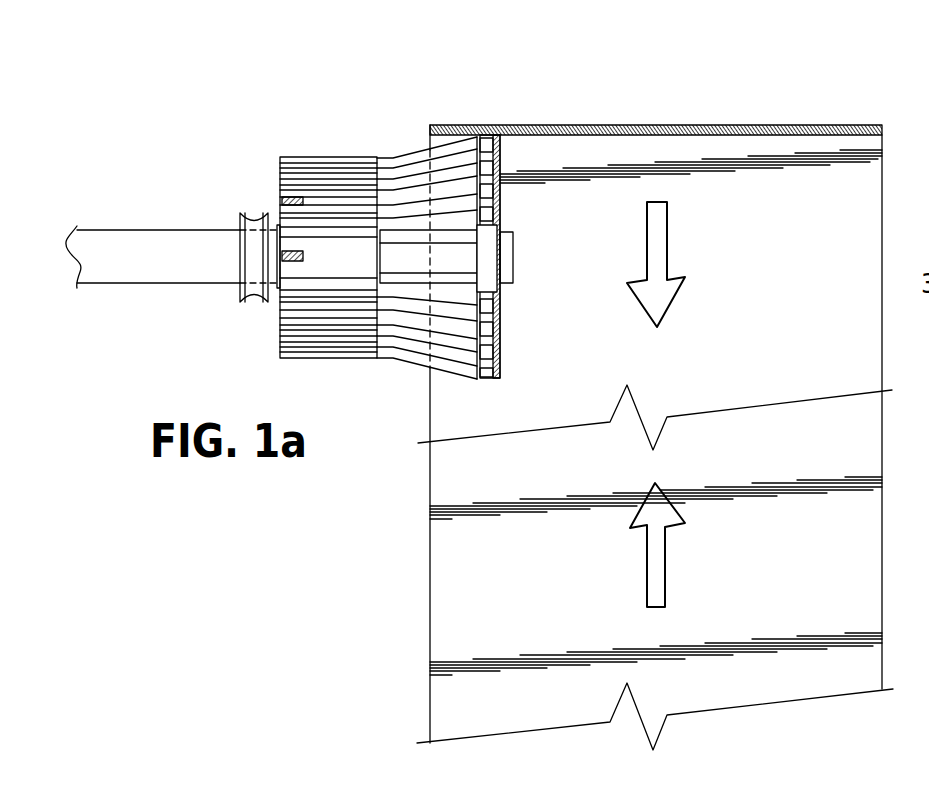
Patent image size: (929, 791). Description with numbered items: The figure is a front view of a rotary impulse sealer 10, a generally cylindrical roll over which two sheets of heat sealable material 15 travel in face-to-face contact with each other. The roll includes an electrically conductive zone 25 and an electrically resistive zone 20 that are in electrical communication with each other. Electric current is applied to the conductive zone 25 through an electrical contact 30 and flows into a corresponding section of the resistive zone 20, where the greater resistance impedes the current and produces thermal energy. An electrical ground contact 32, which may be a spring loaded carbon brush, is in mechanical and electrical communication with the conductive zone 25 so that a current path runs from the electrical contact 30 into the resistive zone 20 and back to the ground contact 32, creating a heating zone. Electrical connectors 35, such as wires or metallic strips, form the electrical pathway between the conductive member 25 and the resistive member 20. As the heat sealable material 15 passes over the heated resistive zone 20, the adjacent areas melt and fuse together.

The rotary impulse sealer 10 is at (247, 133).
The heat sealable material 15 is at (884, 186).
The electrically resistive zone 20 is at (511, 327).
The electrically conductive zone 25 is at (313, 157).
The electrical contact 30 is at (282, 195).
The electrical ground contact 32 is at (293, 263).
The electrical connectors 35 is at (406, 156).